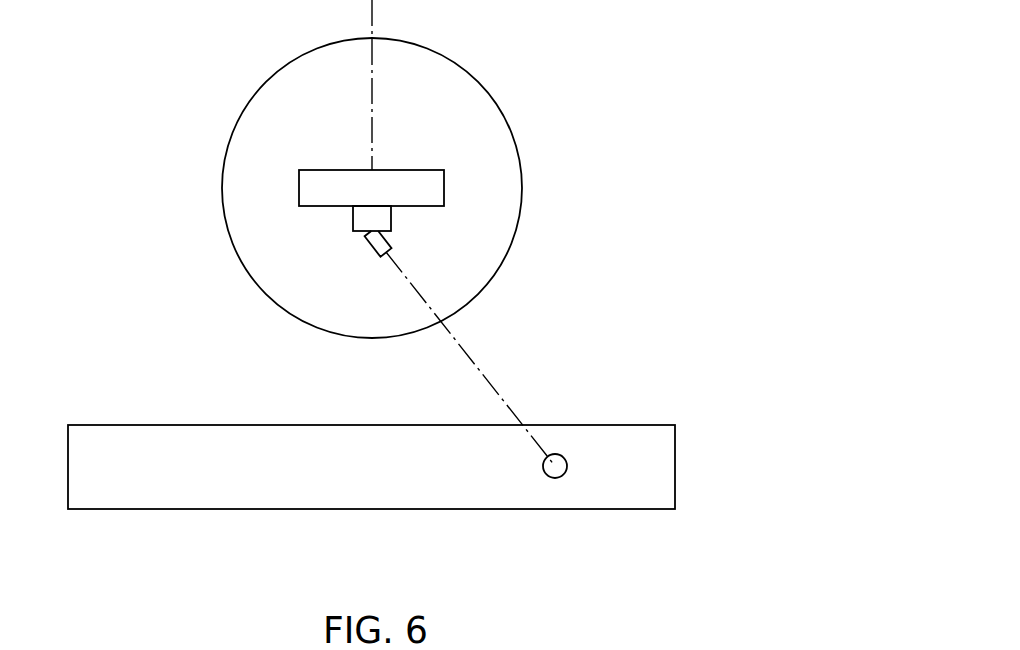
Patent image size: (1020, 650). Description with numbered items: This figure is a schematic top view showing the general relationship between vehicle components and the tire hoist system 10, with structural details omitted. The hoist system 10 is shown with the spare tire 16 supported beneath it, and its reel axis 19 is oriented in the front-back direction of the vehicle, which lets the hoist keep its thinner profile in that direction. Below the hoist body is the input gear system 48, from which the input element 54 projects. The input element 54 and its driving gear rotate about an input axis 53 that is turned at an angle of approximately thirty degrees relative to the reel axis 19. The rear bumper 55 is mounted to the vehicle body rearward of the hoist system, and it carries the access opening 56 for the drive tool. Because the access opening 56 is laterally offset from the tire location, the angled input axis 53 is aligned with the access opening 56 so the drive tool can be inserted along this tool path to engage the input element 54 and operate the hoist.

The reel axis 19 is at (372, 17).
The spare tire 16 is at (522, 172).
The tire hoist system 10 is at (449, 163).
The input gear system 48 is at (410, 234).
The input element 54 is at (368, 246).
The input axis 53 is at (437, 304).
The rear bumper 55 is at (405, 492).
The access opening 56 is at (555, 478).